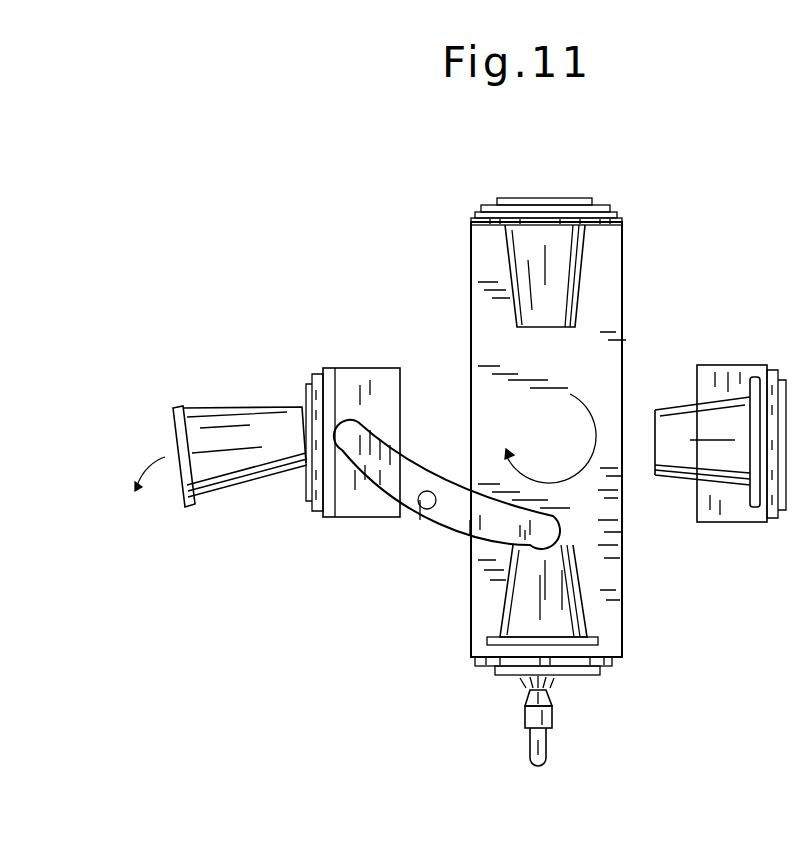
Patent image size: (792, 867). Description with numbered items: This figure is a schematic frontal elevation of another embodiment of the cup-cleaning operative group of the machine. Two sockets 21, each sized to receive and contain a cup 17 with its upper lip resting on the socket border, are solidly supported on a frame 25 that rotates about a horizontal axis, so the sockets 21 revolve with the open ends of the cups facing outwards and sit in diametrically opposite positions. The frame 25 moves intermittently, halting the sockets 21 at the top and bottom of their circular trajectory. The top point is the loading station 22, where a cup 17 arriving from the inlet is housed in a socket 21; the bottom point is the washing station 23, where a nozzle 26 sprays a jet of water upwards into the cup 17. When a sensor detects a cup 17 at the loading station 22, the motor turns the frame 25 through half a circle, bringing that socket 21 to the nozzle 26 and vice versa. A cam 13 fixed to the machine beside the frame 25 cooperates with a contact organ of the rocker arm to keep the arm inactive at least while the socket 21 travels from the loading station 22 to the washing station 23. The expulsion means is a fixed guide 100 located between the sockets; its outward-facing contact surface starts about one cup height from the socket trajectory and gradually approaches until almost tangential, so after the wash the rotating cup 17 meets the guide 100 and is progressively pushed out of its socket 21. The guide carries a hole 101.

The cam 13 is at (466, 325).
The cup 17 is at (505, 258).
The socket 21 is at (603, 668).
The loading station 22 is at (551, 196).
The washing station 23 is at (521, 685).
The frame 25 is at (612, 488).
The nozzle 26 is at (553, 715).
The fixed guide 100 is at (395, 512).
The pivot hole 101 is at (447, 535).